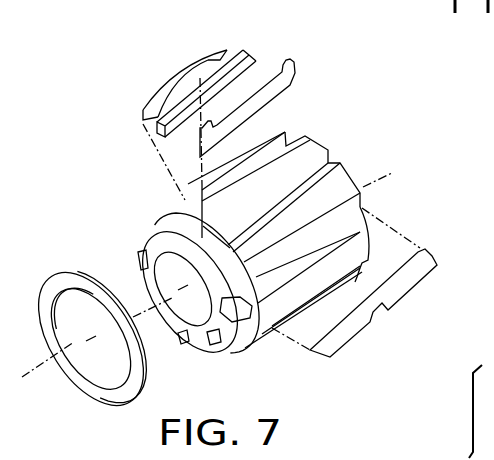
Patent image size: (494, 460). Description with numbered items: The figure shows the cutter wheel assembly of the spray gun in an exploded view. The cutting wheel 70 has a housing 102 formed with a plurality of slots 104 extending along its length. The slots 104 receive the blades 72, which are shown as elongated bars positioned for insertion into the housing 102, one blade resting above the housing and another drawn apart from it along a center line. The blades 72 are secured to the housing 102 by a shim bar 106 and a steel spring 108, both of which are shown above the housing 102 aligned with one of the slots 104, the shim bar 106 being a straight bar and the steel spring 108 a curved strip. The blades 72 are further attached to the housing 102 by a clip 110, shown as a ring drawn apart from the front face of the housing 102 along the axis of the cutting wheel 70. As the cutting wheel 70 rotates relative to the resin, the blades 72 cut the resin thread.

The cutting wheel 70 is at (374, 131).
The blade 72 is at (290, 70).
The housing 102 is at (343, 202).
The slot 104 is at (240, 322).
The shim bar 106 is at (248, 50).
The steel spring 108 is at (185, 68).
The clip 110 is at (133, 375).